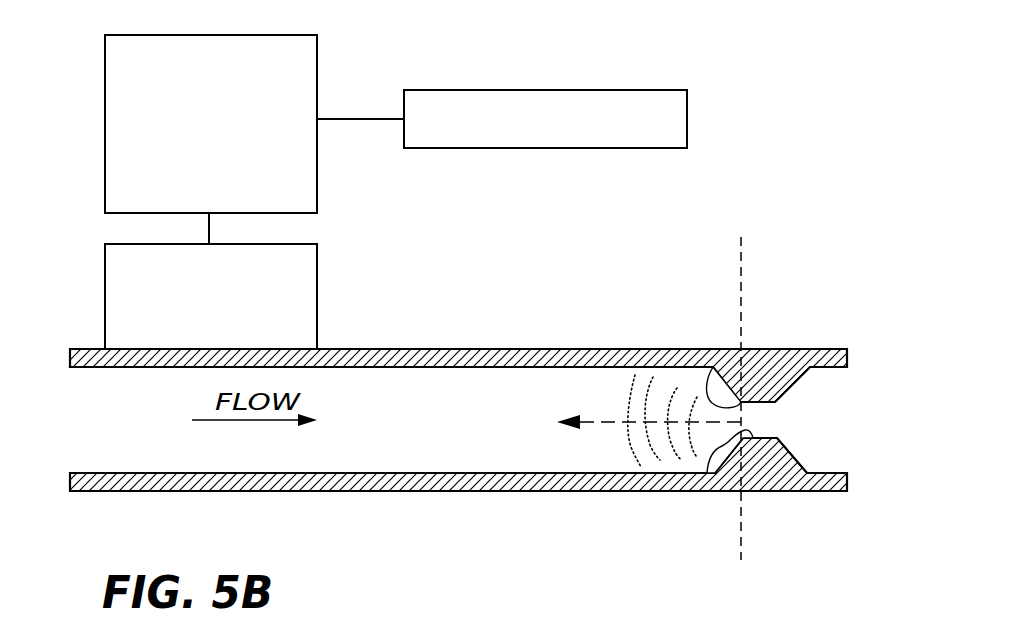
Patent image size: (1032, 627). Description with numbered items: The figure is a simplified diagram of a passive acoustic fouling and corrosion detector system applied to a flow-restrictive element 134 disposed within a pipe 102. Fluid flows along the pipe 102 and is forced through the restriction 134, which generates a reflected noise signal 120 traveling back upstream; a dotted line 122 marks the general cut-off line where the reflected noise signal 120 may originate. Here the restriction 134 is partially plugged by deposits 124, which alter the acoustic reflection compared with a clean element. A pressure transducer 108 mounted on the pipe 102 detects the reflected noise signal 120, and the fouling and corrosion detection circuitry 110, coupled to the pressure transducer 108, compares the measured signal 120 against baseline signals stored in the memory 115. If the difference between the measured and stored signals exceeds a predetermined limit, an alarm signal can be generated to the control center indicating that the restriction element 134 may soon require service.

The fouling and corrosion detection circuitry 110 is at (105, 126).
The memory 115 is at (541, 90).
The pressure transducer 108 is at (317, 295).
The pipe 102 is at (572, 349).
The flow-restrictive element 134 is at (758, 376).
The deposits 124 is at (713, 460).
The reflected noise signal 120 is at (629, 460).
The dotted line 122 is at (742, 525).